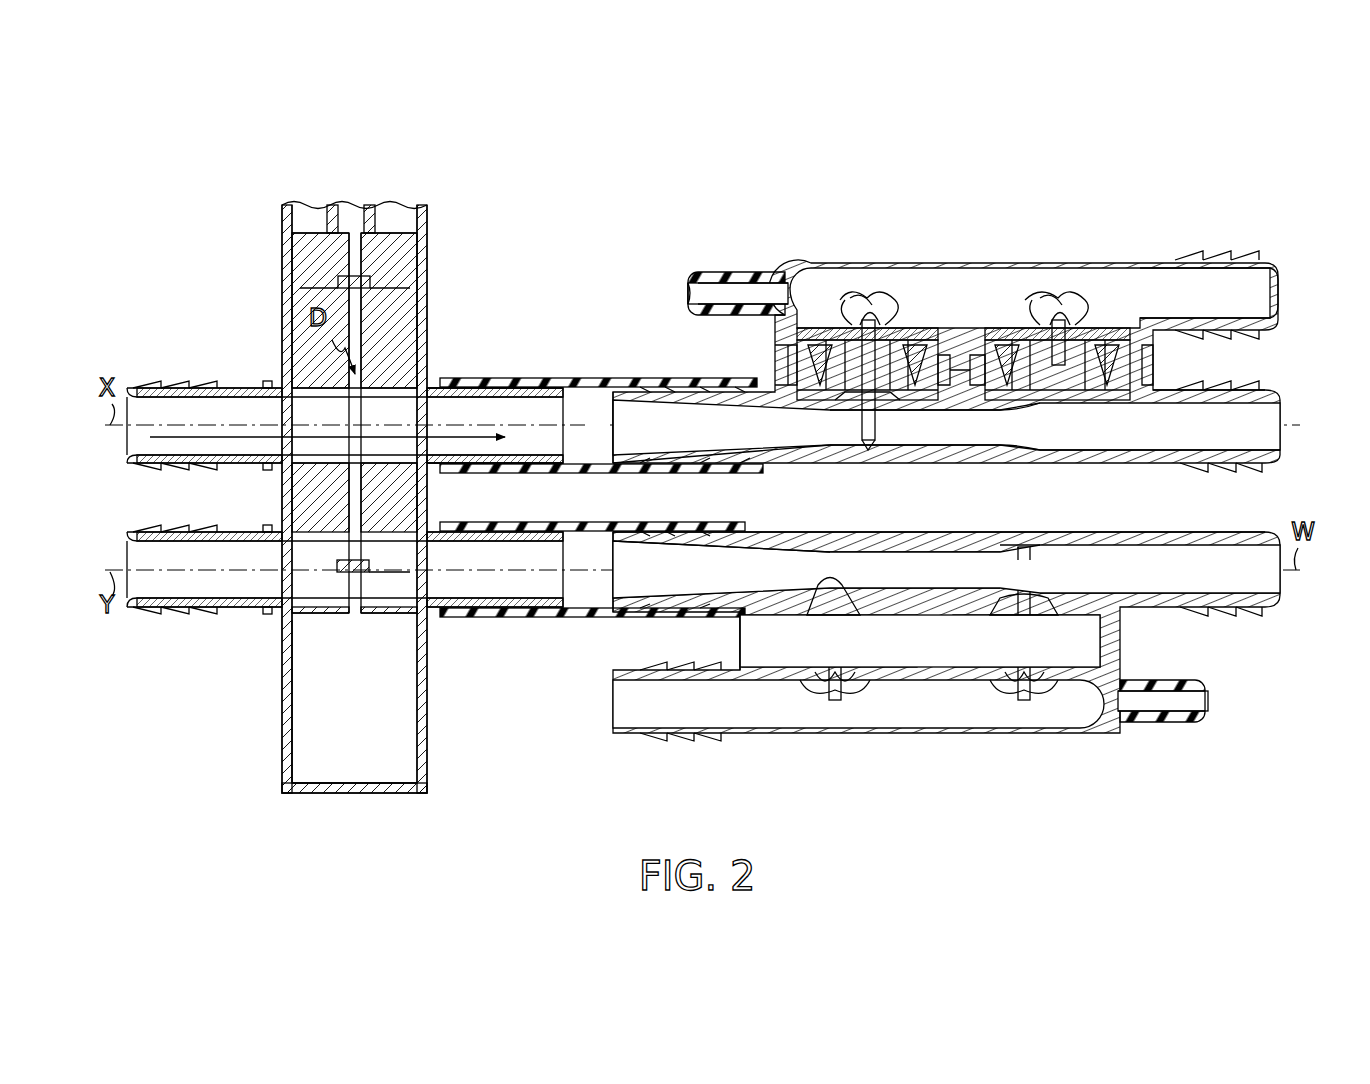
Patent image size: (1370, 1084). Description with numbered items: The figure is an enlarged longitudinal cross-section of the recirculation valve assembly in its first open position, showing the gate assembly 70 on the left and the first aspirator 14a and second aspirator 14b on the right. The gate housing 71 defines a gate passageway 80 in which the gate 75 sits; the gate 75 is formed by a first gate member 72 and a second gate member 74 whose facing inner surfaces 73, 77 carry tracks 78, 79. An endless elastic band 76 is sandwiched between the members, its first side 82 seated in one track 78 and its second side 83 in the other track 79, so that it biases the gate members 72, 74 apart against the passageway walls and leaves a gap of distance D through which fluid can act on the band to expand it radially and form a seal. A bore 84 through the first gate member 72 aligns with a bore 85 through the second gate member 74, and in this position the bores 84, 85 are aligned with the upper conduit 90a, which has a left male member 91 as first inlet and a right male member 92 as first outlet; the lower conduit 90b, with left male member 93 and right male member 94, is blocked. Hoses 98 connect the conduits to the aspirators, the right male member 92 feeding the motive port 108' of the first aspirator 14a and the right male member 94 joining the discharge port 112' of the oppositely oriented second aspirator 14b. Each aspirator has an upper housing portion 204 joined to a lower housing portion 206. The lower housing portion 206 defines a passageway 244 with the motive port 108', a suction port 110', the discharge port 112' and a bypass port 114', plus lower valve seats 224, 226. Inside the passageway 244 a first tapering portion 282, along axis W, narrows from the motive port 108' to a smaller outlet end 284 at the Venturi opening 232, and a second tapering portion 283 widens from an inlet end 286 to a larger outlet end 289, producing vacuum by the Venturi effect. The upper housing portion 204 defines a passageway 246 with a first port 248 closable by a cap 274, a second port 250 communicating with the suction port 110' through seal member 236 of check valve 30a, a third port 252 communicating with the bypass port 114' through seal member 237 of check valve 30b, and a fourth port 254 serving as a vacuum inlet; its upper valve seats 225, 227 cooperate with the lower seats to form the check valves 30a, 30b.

The first aspirator 14a is at (975, 228).
The second aspirator 14b is at (915, 770).
The check valve 30a is at (862, 320).
The check valve 30b is at (1035, 315).
The gate assembly 70 is at (262, 800).
The gate housing 71 is at (418, 730).
The first gate member 72 is at (310, 225).
The inner surface 73 is at (347, 485).
The second gate member 74 is at (398, 225).
The gate 75 is at (355, 622).
The endless elastic band 76 is at (356, 290).
The inner surface 77 is at (358, 520).
The track 78 is at (337, 568).
The track 79 is at (369, 568).
The gate passageway 80 is at (292, 730).
The first side 82 is at (338, 284).
The second side 83 is at (370, 284).
The bore 84 is at (312, 415).
The bore 85 is at (396, 415).
The upper conduit 90a is at (232, 398).
The lower conduit 90b is at (228, 603).
The left male member 91 is at (148, 388).
The right male member 92 is at (506, 388).
The left male member 93 is at (148, 607).
The right male member 94 is at (506, 607).
The hoses 98 is at (564, 378).
The motive port 108' is at (946, 495).
The suction port 110' is at (754, 360).
The discharge port 112' is at (945, 537).
The bypass port 114' is at (1180, 361).
The upper housing portion 204 is at (802, 262).
The lower housing portion 206 is at (804, 533).
The lower valve seat 224 is at (842, 405).
The upper valve seat 225 is at (1128, 680).
The lower valve seat 226 is at (1098, 404).
The upper valve seat 227 is at (740, 658).
The Venturi opening 232 is at (1000, 600).
The seal member 236 is at (912, 330).
The seal member 237 is at (1106, 332).
The passageway 244 is at (946, 464).
The passageway 246 is at (1208, 300).
The first port 248 is at (728, 292).
The second port 250 is at (872, 300).
The third port 252 is at (1080, 300).
The fourth port 254 is at (1282, 300).
The cap 274 is at (690, 290).
The first tapering portion 282 is at (708, 470).
The second tapering portion 283 is at (896, 452).
The outlet end 284 is at (1030, 557).
The inlet end 286 is at (1004, 540).
The outlet end 289 is at (862, 578).